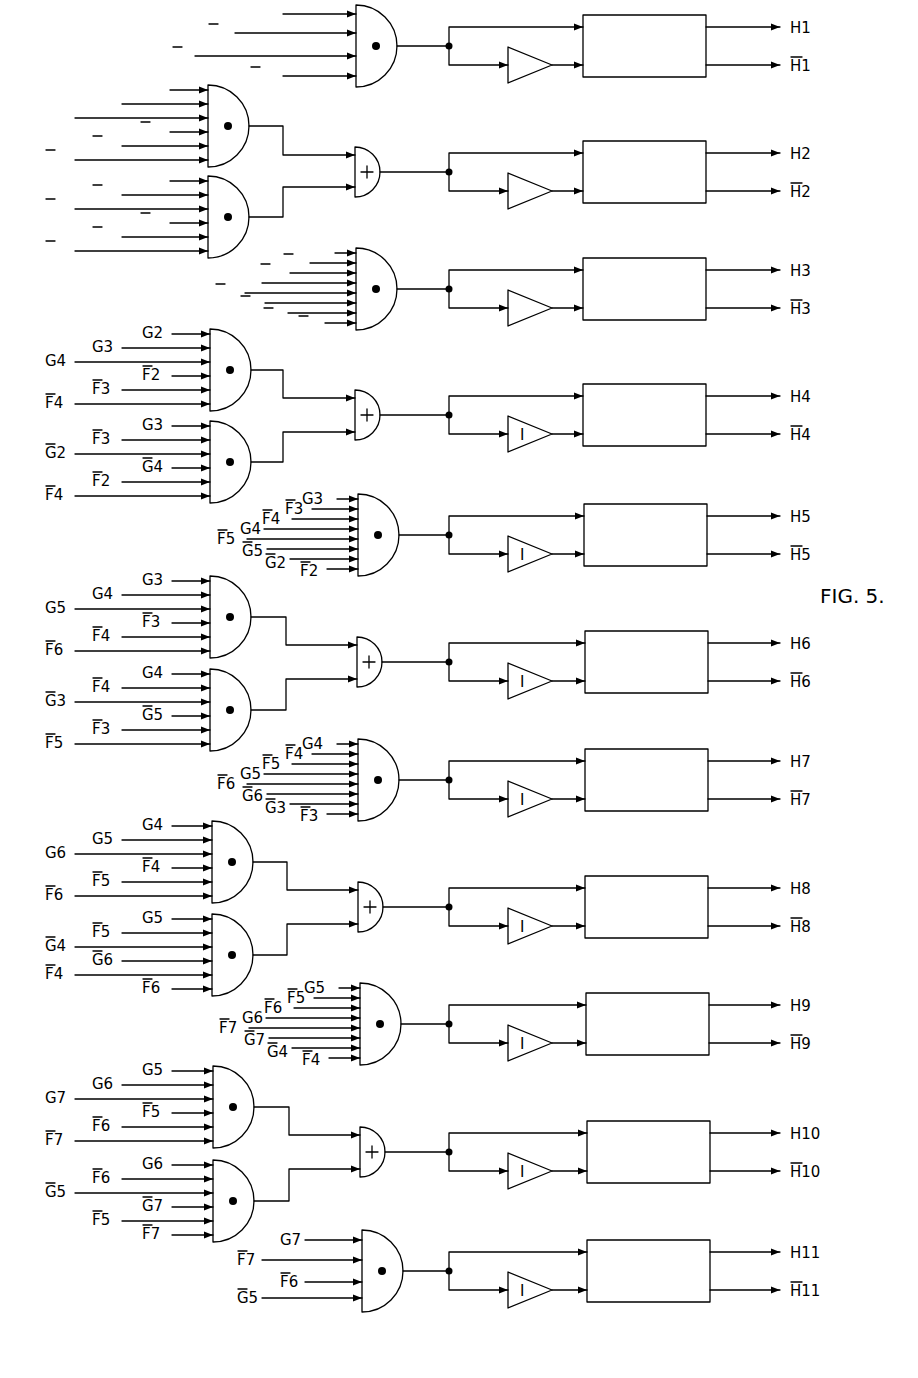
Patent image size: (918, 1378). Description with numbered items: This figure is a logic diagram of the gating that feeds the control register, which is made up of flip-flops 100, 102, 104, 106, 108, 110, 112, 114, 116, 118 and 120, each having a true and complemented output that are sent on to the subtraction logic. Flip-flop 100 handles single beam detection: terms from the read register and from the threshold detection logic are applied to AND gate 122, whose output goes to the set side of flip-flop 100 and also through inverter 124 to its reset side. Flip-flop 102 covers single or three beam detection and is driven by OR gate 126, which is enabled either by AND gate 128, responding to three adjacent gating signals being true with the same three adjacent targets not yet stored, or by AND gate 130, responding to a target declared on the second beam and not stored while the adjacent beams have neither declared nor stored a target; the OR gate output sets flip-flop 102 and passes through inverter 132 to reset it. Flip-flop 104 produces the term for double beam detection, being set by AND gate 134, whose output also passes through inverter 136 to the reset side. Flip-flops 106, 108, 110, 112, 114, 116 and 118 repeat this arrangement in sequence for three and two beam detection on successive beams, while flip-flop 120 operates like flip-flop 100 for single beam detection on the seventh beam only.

The flip-flop 100 is at (644, 62).
The flip-flop 102 is at (651, 181).
The flip-flop 104 is at (652, 297).
The flip-flop 106 is at (650, 430).
The flip-flop 108 is at (647, 547).
The flip-flop 110 is at (650, 676).
The flip-flop 112 is at (654, 791).
The flip-flop 114 is at (666, 885).
The flip-flop 116 is at (657, 1012).
The flip-flop 118 is at (659, 1137).
The flip-flop 120 is at (660, 1256).
The AND gate 122 is at (301, 45).
The inverter 124 is at (531, 80).
The OR gate 126 is at (387, 164).
The AND gate 128 is at (169, 124).
The AND gate 130 is at (163, 210).
The inverter 132 is at (532, 205).
The AND gate 134 is at (319, 283).
The inverter 136 is at (532, 319).